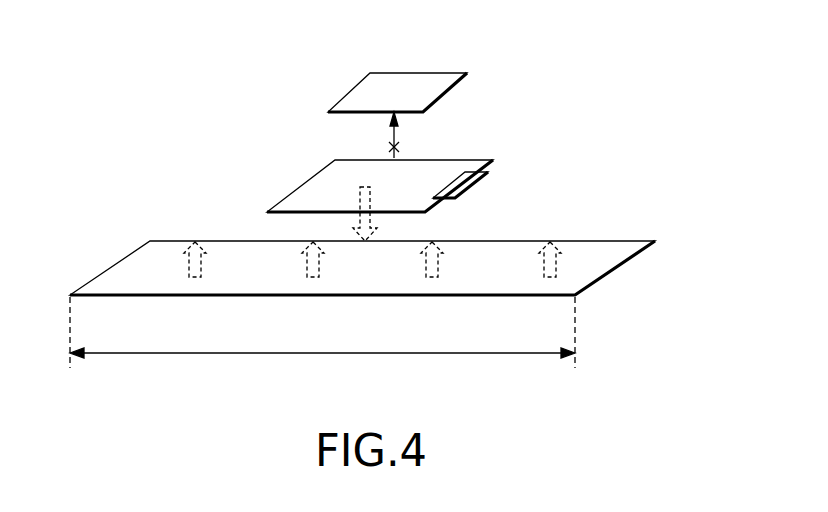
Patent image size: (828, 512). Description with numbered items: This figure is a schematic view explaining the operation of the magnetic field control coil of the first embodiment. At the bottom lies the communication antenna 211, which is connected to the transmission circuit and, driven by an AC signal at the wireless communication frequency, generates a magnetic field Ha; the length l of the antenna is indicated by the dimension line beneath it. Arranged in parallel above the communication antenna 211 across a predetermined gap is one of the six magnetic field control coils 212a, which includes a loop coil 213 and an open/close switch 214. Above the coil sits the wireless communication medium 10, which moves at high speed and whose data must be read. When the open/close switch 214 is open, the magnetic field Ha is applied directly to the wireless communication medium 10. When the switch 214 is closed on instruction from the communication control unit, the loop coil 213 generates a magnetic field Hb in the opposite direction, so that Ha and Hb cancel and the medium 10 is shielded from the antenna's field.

The wireless communication medium 10 is at (400, 80).
The communication antenna 211 is at (160, 248).
The magnetic field control coil 212a is at (465, 160).
The loop coil 213 is at (303, 181).
The open/close switch 214 is at (477, 180).
The magnetic field Ha is at (557, 262).
The magnetic field Hb is at (370, 220).
The length of light guide plate l is at (318, 345).